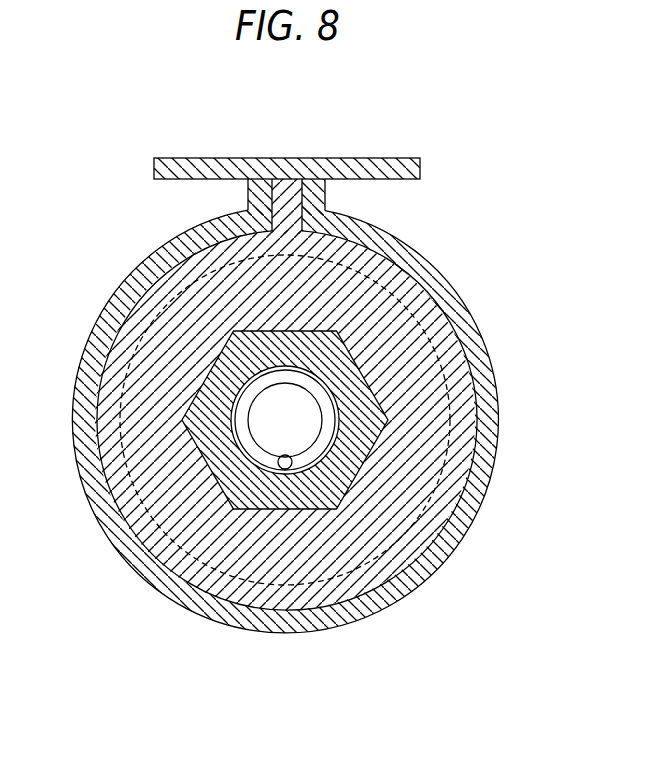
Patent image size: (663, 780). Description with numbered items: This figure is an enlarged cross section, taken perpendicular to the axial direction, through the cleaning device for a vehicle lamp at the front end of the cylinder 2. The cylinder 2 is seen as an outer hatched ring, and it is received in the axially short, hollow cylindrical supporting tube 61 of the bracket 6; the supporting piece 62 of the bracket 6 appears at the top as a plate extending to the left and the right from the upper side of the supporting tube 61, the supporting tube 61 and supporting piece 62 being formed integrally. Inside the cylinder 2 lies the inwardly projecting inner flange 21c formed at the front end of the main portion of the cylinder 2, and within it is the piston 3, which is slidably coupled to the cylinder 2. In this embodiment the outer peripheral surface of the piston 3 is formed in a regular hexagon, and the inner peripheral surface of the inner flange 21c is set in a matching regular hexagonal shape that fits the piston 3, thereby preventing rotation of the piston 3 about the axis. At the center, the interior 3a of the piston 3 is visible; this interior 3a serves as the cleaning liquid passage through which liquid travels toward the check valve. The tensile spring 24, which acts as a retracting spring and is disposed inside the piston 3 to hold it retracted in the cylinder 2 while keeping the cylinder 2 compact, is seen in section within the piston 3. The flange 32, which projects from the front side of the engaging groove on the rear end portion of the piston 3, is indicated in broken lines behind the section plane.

The cylinder 2 is at (114, 293).
The piston 3 is at (176, 393).
The interior of the piston 3a is at (250, 428).
The bracket 6 is at (278, 154).
The inner flange 21c is at (250, 512).
The tensile spring 24 is at (323, 390).
The flange 32 is at (450, 408).
The supporting tube 61 is at (475, 523).
The supporting piece 62 is at (198, 158).